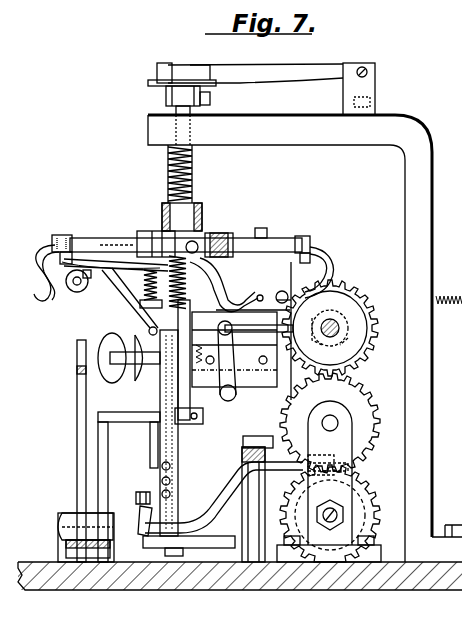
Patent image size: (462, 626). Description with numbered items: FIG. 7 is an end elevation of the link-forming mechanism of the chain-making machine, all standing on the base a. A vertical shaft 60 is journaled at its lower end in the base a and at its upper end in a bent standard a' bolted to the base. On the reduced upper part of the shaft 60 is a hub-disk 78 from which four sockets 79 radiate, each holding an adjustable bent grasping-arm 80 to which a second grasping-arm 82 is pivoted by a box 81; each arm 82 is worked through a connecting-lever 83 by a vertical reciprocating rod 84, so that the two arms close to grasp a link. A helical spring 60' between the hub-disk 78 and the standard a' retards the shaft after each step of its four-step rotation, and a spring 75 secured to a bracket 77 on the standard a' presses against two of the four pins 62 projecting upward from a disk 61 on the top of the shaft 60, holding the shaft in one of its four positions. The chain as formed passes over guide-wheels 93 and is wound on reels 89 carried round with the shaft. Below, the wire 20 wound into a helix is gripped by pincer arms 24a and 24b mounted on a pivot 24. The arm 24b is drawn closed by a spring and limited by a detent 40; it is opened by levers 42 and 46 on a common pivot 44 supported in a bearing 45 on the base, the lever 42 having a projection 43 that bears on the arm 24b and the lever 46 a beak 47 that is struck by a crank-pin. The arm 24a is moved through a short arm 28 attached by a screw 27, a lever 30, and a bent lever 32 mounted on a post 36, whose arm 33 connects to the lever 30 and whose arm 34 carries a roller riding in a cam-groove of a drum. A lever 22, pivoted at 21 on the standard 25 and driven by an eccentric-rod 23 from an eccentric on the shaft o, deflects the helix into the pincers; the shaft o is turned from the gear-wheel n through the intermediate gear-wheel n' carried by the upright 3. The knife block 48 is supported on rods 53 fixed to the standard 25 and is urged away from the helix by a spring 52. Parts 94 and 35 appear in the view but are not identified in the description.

The spring 75 is at (300, 66).
The bracket 77 is at (376, 98).
The pins 62 is at (156, 71).
The disk 61 is at (166, 96).
The vertical shaft 60 is at (207, 118).
The helical spring 60' is at (200, 174).
The hub-disk 78 is at (200, 219).
The sockets 79 is at (120, 238).
The bent grasping-arm 80 is at (74, 238).
The box 81 is at (185, 239).
The grasping-arm 82 is at (40, 282).
The connecting-lever 83 is at (132, 298).
The guide-wheels 93 is at (80, 292).
The rod 94 is at (112, 272).
The reels 89 is at (104, 335).
The pivot 24 is at (110, 376).
The grasping-arm 24a is at (149, 331).
The grasping-arm 24b is at (178, 450).
The beak 47 is at (76, 352).
The lever 46 is at (77, 428).
The projection 43 is at (129, 408).
The lever 42 is at (100, 480).
The vertical reciprocating rod 84 is at (150, 438).
The short arm 28 is at (160, 480).
The screw 27 is at (136, 497).
The lever 30 is at (142, 514).
The common pivot 44 is at (58, 527).
The bearing 45 is at (60, 513).
The arm of bent lever 33 is at (143, 548).
The bent lever 32 is at (222, 483).
The post 36 is at (242, 522).
The standard 25 is at (243, 438).
The arm of bent lever 34 is at (266, 446).
The spring 52 is at (234, 349).
The block 48 is at (255, 360).
The rods 53 is at (284, 331).
The lever 22 is at (256, 368).
The eccentric-rod 23 is at (254, 321).
The pivot 21 is at (238, 400).
The detent 40 is at (197, 411).
The shaft o is at (333, 326).
The intermediate gear-wheel n' is at (335, 423).
The gear-wheel n is at (333, 513).
The upright 3 is at (352, 480).
The pawl 35 is at (330, 464).
The wire 20 is at (437, 304).
The base a is at (240, 364).
The bent standard a' is at (442, 457).